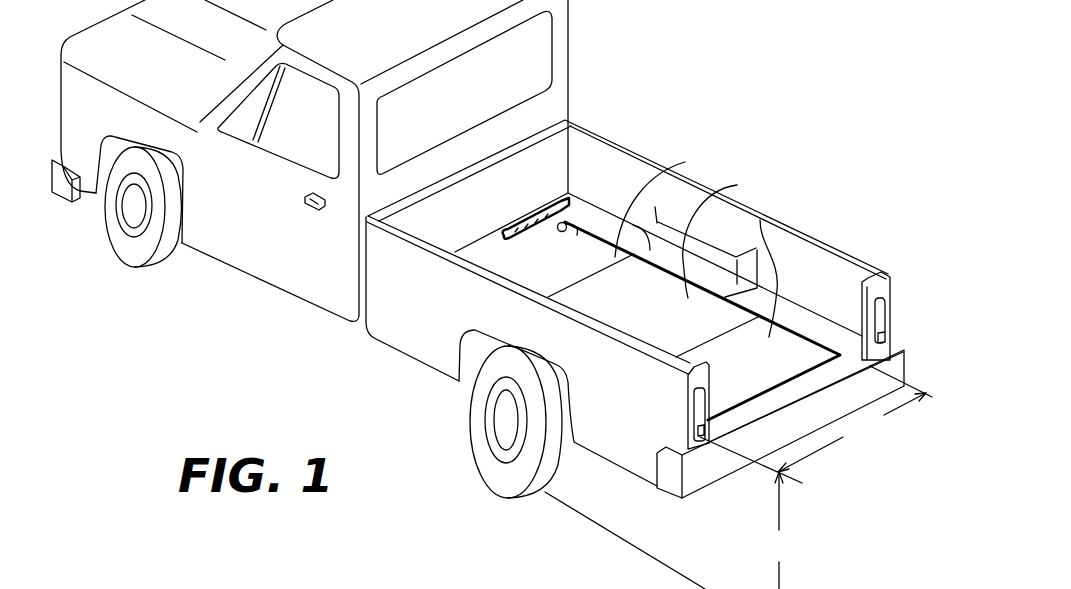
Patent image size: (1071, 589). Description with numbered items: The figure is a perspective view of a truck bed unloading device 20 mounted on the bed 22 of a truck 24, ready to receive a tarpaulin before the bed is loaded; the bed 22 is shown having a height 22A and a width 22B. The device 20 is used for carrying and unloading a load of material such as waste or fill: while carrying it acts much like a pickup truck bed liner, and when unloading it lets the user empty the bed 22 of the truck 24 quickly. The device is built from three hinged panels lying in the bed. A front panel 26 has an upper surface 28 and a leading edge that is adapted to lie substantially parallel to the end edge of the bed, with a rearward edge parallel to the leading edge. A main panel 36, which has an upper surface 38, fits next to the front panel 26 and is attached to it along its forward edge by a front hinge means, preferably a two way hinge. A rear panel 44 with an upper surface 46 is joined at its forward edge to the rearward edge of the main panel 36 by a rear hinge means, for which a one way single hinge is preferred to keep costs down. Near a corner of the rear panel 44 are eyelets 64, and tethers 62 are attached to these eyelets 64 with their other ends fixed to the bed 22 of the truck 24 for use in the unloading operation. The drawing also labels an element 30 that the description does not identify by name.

The truck bed unloading device 20 is at (638, 103).
The bed 22 is at (813, 333).
The height 22A is at (783, 530).
The width 22B is at (816, 424).
The truck 24 is at (185, 337).
The front panel 26 is at (760, 220).
The upper surface 28 is at (756, 374).
The side wall stake post 30 is at (905, 350).
The main panel 36 is at (737, 185).
The upper surface 38 is at (649, 315).
The rear panel 44 is at (665, 200).
The upper surface 46 is at (547, 271).
The tethers 62 is at (548, 212).
The eyelets 64 is at (573, 233).